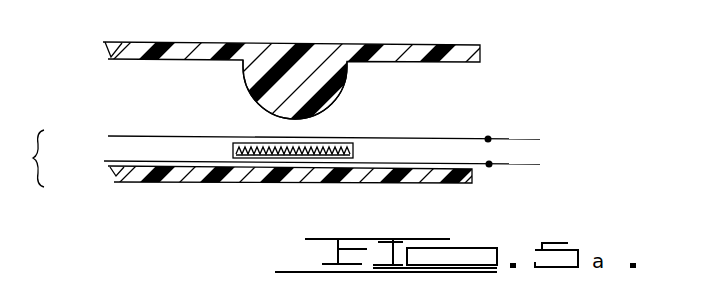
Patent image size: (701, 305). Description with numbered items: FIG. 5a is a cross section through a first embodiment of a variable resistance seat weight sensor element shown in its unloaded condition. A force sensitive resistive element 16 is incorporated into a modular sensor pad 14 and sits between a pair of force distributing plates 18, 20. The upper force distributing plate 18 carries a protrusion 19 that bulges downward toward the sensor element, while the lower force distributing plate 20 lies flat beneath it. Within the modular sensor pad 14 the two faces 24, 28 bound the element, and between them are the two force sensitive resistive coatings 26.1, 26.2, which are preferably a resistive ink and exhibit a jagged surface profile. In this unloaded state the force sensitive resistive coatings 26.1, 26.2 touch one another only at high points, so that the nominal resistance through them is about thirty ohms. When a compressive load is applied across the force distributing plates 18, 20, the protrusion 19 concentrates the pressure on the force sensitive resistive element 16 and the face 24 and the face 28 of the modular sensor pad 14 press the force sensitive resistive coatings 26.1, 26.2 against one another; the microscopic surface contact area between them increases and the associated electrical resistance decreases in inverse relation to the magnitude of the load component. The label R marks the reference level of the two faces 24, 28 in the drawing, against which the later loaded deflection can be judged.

The modular sensor pad 14 is at (23, 158).
The force sensitive resistive element 16 is at (183, 185).
The force distributing plate 18 is at (481, 52).
The protrusion 19 is at (337, 89).
The force distributing plate 20 is at (473, 176).
The face of the modular sensor pad 24 is at (144, 136).
The force sensitive resistive coating 26.1 is at (242, 143).
The force sensitive resistive coating 26.2 is at (348, 158).
The face of the modular sensor pad 28 is at (106, 162).
The reference plane R is at (523, 152).